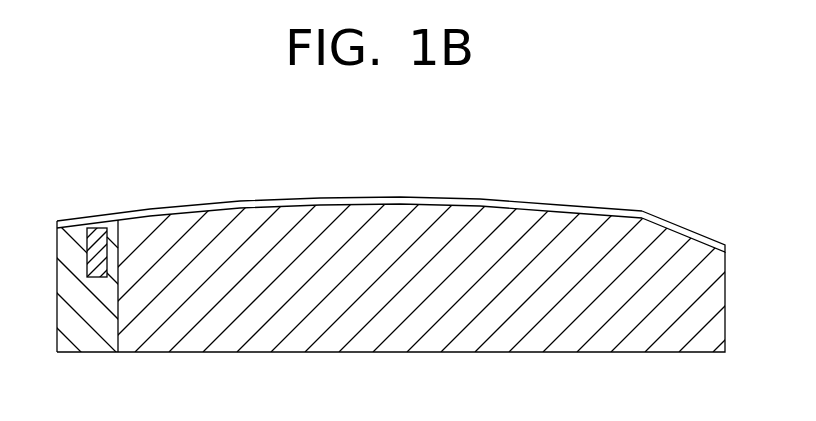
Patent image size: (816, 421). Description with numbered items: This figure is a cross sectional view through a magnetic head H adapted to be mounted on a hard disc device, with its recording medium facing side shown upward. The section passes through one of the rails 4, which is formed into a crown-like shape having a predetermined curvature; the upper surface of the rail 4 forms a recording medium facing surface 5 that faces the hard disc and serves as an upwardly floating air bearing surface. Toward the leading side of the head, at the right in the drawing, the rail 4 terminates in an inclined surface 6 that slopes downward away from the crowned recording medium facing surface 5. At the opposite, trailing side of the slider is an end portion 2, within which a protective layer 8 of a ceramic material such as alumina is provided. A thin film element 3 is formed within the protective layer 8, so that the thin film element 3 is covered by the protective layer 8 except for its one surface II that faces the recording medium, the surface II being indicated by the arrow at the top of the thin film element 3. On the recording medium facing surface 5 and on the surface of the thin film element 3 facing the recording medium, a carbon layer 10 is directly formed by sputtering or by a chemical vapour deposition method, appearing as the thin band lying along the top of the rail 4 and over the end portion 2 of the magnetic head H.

The end portion 2 is at (110, 337).
The thin film element 3 is at (97, 232).
The rail 4 is at (445, 246).
The recording medium facing surface 5 is at (357, 198).
The inclined surface 6 is at (693, 237).
The protective layer 8 is at (67, 240).
The carbon layer 10 is at (290, 202).
The magnetic head H is at (578, 195).
The surface facing a recording medium II is at (93, 183).